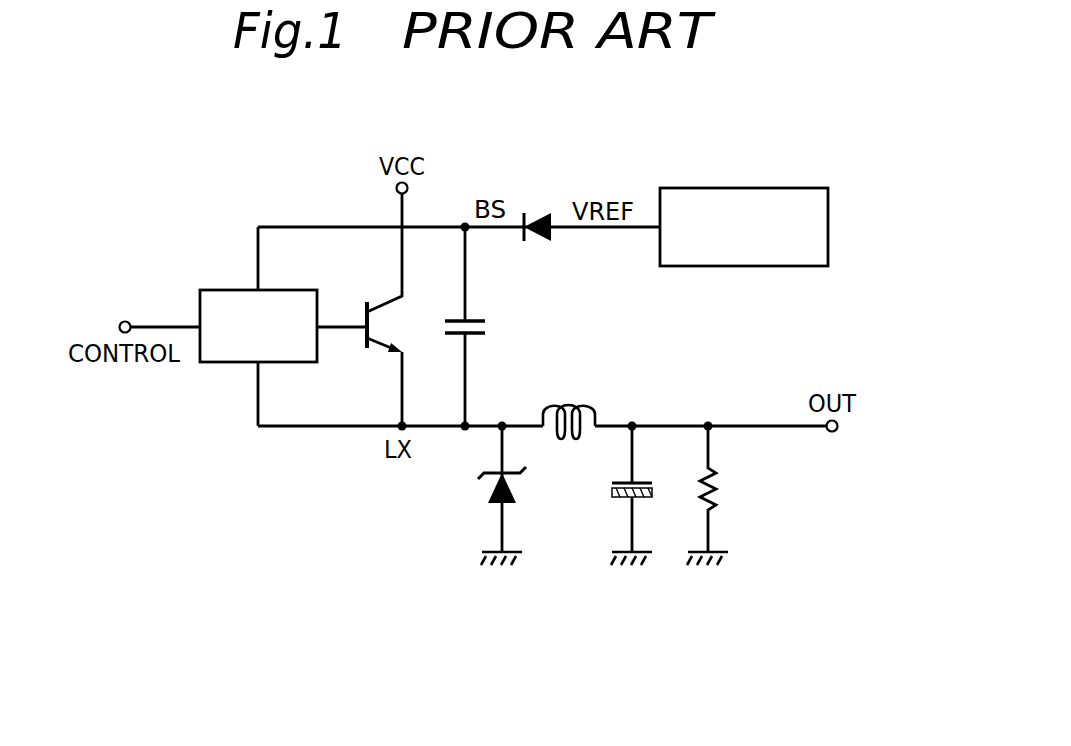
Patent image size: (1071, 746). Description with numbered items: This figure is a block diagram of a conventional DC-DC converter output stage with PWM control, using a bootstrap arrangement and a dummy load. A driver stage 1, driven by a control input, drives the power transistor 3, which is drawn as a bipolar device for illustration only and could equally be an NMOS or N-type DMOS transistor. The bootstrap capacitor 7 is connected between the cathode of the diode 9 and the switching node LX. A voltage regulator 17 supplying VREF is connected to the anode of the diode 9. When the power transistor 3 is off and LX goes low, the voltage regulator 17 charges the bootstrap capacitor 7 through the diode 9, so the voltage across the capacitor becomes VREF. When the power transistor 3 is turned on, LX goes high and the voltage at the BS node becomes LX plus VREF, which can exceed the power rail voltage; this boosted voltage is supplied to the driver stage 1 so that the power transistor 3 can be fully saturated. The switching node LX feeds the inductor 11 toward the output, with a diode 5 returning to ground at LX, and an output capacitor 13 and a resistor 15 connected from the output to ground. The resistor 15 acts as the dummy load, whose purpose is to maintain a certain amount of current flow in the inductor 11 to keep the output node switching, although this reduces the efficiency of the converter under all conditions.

The driver stage 1 is at (222, 290).
The bipolar power transistor 3 is at (386, 300).
The diode D1 5 is at (485, 490).
The bootstrap capacitor 7 is at (476, 313).
The diode 9 is at (534, 214).
The inductor 11 is at (570, 408).
The capacitor C1 13 is at (612, 490).
The resistor 15 is at (720, 490).
The voltage regulator 17 is at (745, 188).